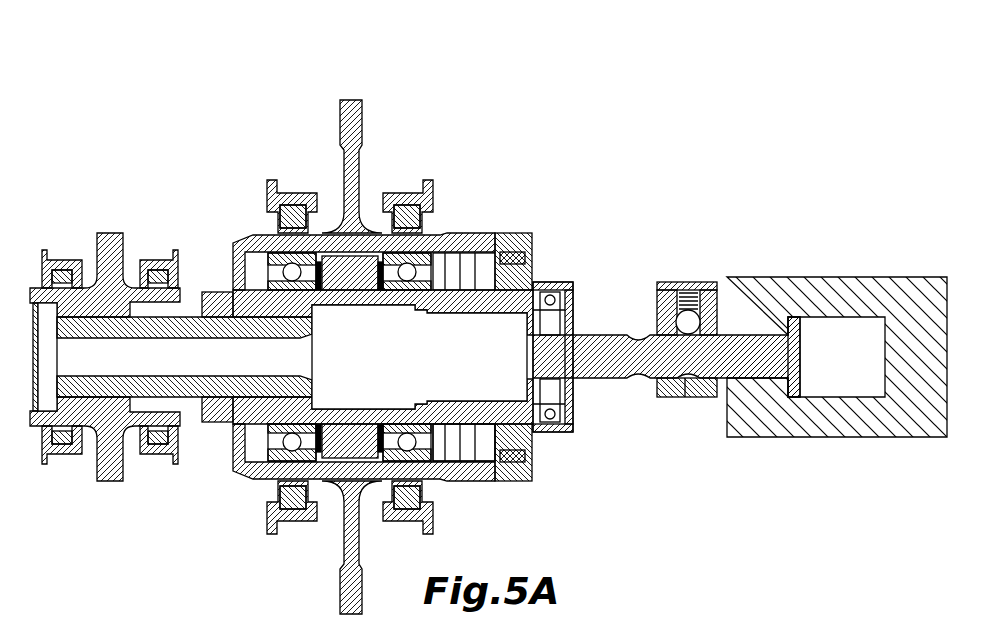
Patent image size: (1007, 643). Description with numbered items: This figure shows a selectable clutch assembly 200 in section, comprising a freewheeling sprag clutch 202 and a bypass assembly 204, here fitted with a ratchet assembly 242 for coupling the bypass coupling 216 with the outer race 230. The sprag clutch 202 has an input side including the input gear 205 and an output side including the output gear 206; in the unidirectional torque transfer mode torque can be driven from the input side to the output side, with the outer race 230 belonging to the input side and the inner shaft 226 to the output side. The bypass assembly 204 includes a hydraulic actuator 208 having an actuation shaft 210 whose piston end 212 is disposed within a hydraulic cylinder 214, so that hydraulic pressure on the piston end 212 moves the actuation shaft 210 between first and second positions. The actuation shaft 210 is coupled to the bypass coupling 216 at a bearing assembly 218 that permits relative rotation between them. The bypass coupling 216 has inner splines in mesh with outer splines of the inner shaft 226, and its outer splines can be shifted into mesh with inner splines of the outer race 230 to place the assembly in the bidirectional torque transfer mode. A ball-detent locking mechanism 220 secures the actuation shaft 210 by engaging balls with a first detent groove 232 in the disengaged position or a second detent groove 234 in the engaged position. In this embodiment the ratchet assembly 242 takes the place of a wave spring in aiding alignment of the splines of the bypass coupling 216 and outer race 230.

The selectable clutch assembly 200 is at (620, 179).
The sprag clutch 202 is at (252, 228).
The bypass assembly 204 is at (912, 277).
The input gear 205 is at (350, 100).
The output gear 206 is at (110, 235).
The hydraulic actuator 208 is at (782, 417).
The actuation shaft 210 is at (748, 335).
The piston end 212 is at (795, 317).
The hydraulic cylinder 214 is at (900, 417).
The bypass coupling 216 is at (525, 258).
The bearing assembly 218 is at (578, 290).
The ball-detent locking mechanism 220 is at (688, 282).
The inner shaft 226 is at (475, 413).
The outer race 230 is at (441, 235).
The first detent groove 232 is at (637, 378).
The second detent groove 234 is at (683, 397).
The ratchet assembly 242 is at (512, 242).